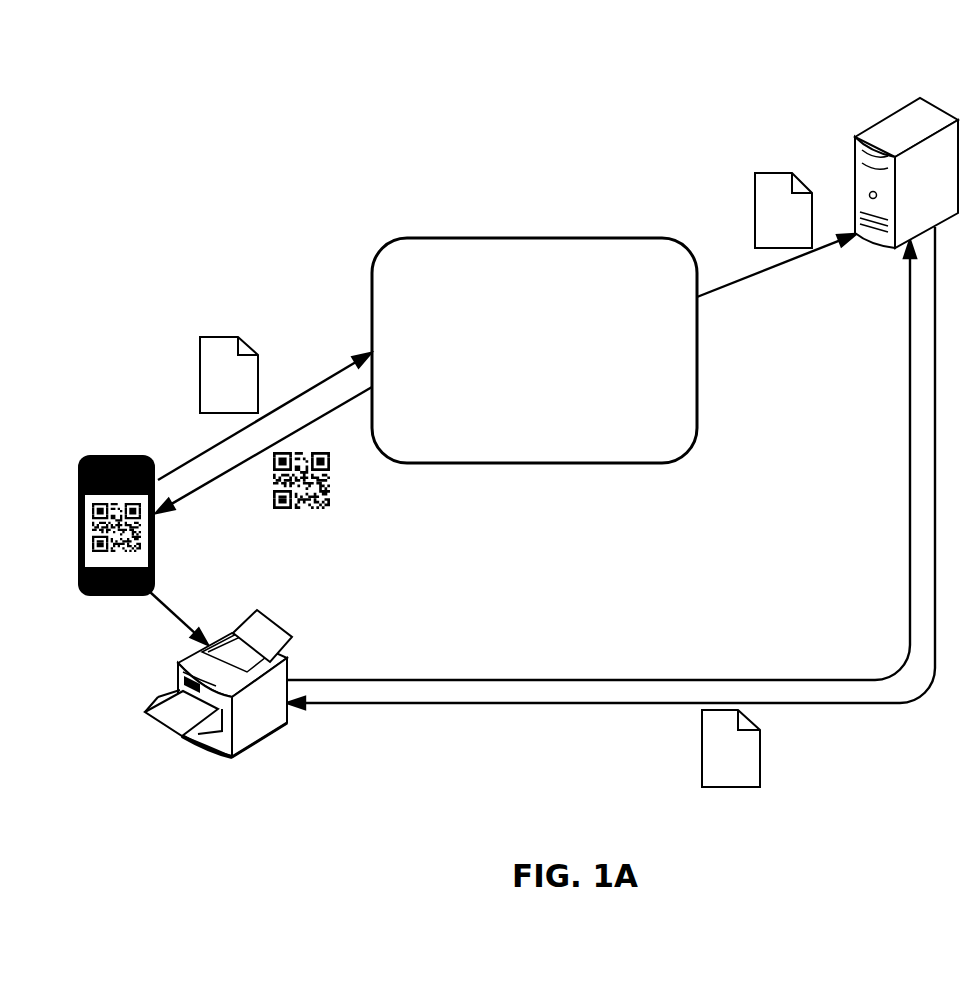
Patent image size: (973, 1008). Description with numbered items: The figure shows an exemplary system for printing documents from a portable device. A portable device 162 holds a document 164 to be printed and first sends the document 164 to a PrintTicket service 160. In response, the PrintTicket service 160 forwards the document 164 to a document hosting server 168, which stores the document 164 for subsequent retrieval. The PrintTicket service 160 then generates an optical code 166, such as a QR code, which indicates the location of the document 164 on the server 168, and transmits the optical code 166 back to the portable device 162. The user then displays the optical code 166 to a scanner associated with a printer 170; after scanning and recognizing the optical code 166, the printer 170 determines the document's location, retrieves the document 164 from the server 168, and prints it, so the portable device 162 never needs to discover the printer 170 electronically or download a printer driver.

The PrintTicket service 160 is at (534, 350).
The portable device 162 is at (95, 456).
The document 164 is at (218, 337).
The optical code 166 is at (310, 507).
The document hosting server 168 is at (944, 107).
The printer 170 is at (283, 722).